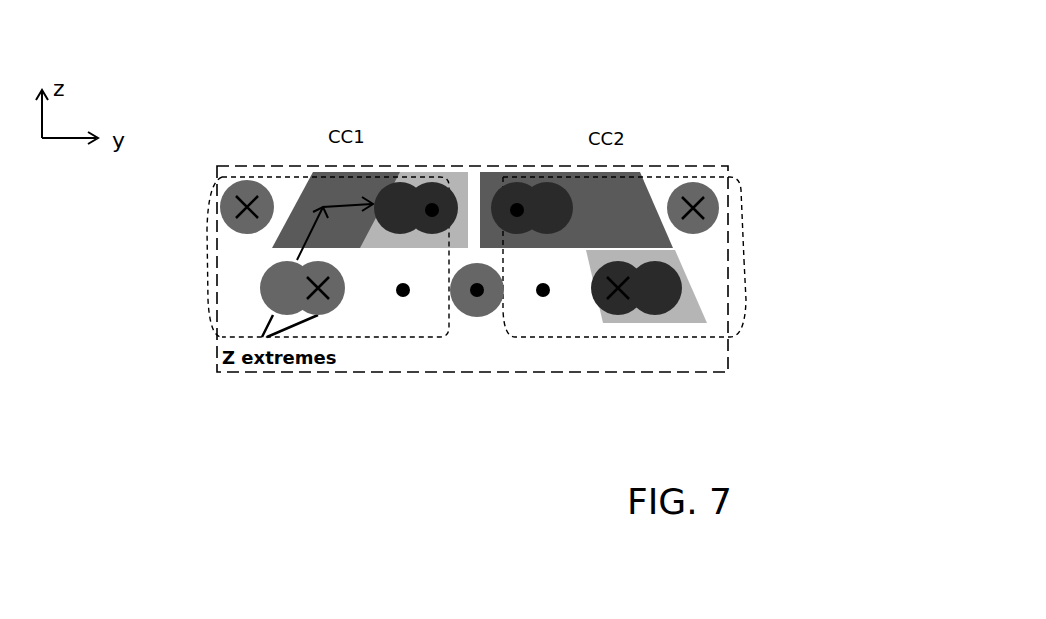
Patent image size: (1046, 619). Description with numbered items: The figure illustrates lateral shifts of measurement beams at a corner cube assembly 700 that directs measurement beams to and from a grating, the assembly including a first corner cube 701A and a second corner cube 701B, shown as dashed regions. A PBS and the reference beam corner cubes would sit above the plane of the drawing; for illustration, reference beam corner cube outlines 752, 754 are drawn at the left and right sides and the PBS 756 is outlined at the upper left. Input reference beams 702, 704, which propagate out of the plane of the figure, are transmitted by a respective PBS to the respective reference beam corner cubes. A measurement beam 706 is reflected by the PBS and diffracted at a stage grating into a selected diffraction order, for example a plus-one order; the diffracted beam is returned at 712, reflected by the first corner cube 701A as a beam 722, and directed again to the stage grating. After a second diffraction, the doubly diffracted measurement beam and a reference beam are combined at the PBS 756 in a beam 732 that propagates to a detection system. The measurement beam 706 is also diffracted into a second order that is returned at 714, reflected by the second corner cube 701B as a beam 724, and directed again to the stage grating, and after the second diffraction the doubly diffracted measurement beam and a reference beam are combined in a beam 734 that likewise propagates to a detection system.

The corner cube assembly 700 is at (798, 198).
The first corner cube 701A is at (245, 300).
The second corner cube 701B is at (628, 176).
The input reference beam 702 is at (403, 312).
The input reference beam 704 is at (543, 300).
The measurement beam 706 is at (473, 302).
The returned diffracted beam 712 is at (337, 302).
The returned second-order diffracted beam 714 is at (680, 300).
The beam 722 is at (448, 195).
The beam 724 is at (512, 195).
The combined beam 732 is at (265, 207).
The combined beam 734 is at (705, 198).
The reference beam corner cube outline 752 is at (203, 272).
The reference beam corner cube outline 754 is at (747, 295).
The PBS 756 is at (278, 167).